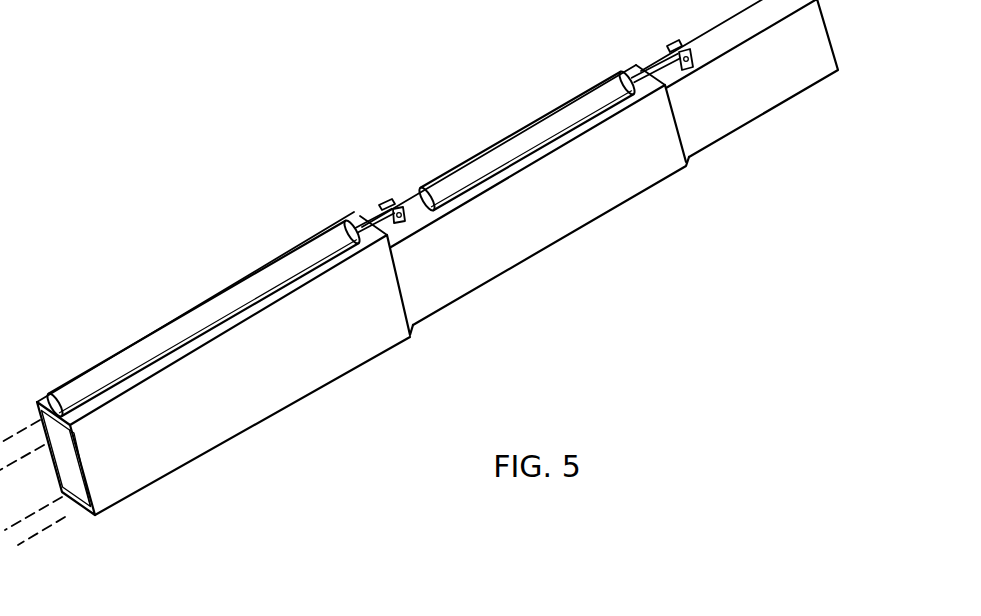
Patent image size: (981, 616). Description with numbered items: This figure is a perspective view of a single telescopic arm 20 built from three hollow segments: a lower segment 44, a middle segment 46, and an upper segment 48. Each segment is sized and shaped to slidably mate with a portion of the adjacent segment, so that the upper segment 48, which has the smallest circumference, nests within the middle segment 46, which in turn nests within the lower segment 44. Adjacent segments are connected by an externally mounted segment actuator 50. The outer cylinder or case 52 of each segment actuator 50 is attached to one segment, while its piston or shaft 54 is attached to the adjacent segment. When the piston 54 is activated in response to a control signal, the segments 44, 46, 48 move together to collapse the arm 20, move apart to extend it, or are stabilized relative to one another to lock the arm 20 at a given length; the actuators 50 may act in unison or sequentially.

The telescopic arm 20 is at (675, 235).
The lower segment 44 is at (232, 413).
The middle segment 46 is at (523, 230).
The upper segment 48 is at (770, 83).
The segment actuator 50 is at (165, 325).
The outer cylinder or case 52 is at (308, 260).
The piston or shaft 54 is at (378, 207).